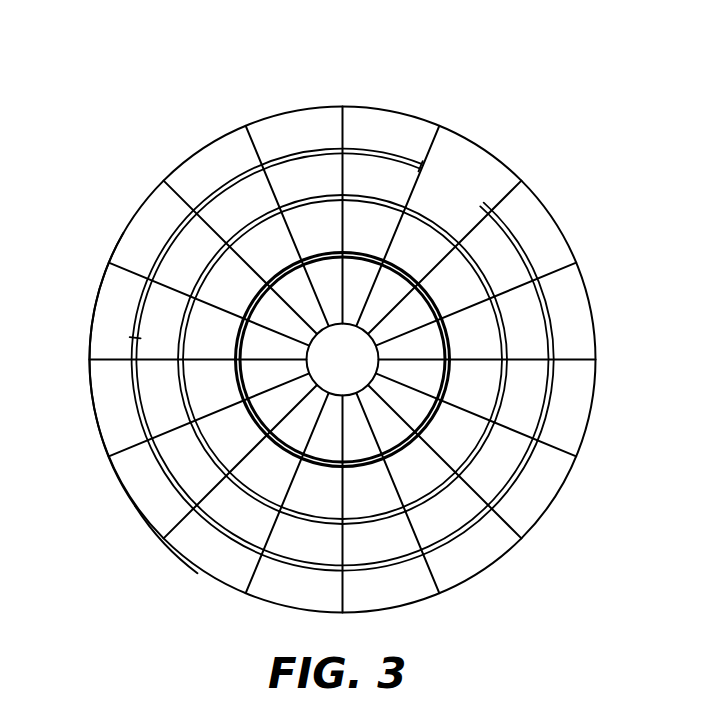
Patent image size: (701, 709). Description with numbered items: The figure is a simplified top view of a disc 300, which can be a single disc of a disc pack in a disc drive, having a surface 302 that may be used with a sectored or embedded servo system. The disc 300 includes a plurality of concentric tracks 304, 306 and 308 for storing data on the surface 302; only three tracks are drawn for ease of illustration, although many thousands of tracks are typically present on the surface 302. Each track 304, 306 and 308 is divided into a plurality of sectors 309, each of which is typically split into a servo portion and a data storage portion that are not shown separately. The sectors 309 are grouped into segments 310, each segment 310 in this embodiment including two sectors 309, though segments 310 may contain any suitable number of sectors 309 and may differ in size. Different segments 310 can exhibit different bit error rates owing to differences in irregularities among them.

The disc 300 is at (502, 92).
The surface 302 is at (495, 201).
The concentric track 304 is at (312, 468).
The concentric track 306 is at (278, 517).
The concentric track 308 is at (212, 533).
The sector 309 is at (98, 467).
The segment 310 is at (85, 264).